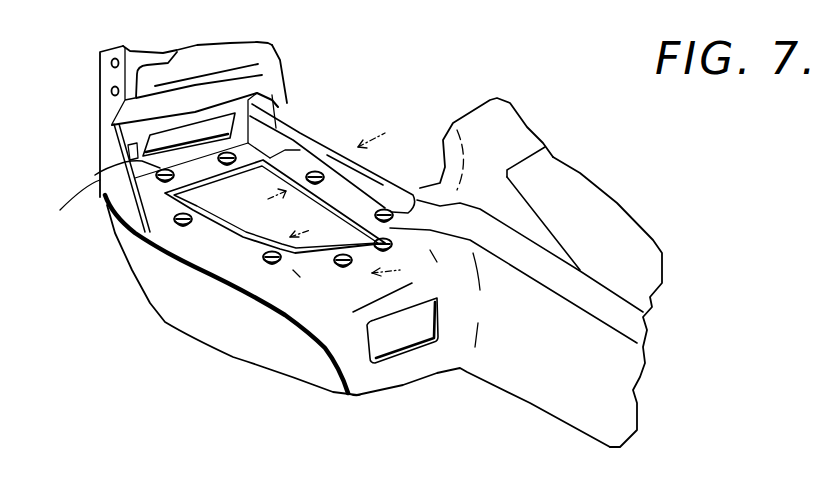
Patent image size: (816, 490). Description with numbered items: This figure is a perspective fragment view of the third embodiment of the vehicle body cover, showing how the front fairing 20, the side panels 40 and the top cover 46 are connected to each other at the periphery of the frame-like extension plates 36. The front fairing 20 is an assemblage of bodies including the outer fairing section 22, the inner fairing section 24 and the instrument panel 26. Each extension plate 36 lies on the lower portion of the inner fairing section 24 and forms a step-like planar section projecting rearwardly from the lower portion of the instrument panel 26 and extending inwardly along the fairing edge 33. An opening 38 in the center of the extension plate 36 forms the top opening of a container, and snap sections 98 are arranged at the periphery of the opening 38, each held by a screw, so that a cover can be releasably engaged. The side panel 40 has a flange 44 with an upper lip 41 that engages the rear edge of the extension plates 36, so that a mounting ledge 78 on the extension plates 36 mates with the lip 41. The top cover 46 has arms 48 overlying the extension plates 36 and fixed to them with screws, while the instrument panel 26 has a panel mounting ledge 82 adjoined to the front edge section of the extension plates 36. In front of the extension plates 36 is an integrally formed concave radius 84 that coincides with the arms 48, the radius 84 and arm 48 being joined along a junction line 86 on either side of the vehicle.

The front fairing 20 is at (103, 246).
The outer fairing section 22 is at (143, 270).
The inner fairing section 24 is at (103, 140).
The instrument panel 26 is at (266, 68).
The fairing edge 33 is at (187, 265).
The frame-like extension plates 36 is at (290, 140).
The opening 38 is at (260, 225).
The side panels 40 is at (472, 397).
The upper lip 41 is at (380, 256).
The flange 44 is at (352, 350).
The top cover 46 is at (546, 131).
The top cover arms 48 is at (335, 140).
The mounting ledge 78 is at (293, 270).
The panel mounting ledge 82 is at (95, 175).
The concave radius 84 is at (287, 107).
The junction line 86 is at (312, 145).
The snap grommet or section 98 is at (220, 162).